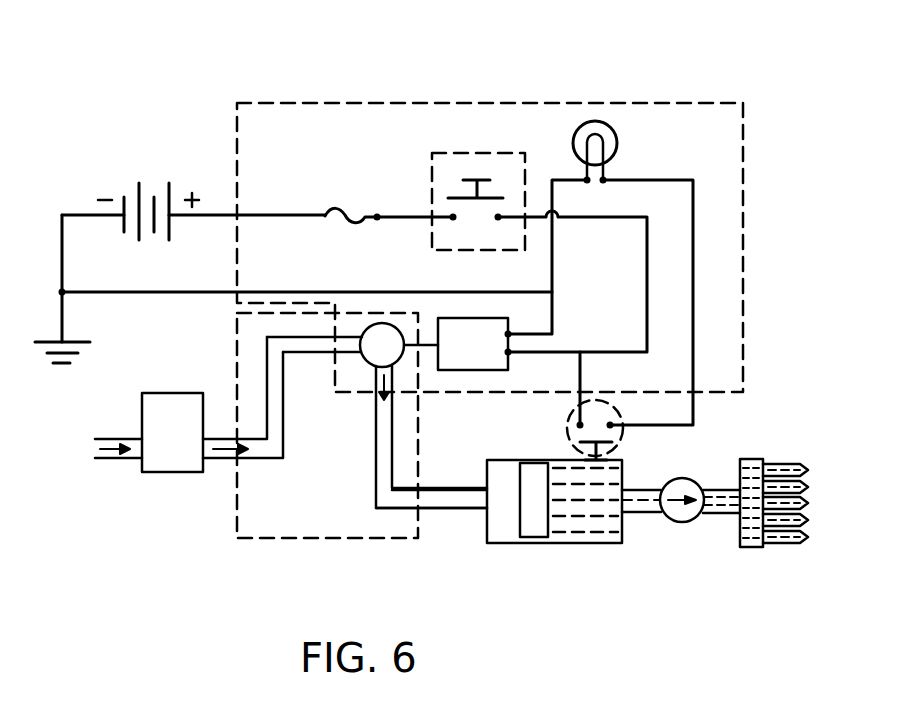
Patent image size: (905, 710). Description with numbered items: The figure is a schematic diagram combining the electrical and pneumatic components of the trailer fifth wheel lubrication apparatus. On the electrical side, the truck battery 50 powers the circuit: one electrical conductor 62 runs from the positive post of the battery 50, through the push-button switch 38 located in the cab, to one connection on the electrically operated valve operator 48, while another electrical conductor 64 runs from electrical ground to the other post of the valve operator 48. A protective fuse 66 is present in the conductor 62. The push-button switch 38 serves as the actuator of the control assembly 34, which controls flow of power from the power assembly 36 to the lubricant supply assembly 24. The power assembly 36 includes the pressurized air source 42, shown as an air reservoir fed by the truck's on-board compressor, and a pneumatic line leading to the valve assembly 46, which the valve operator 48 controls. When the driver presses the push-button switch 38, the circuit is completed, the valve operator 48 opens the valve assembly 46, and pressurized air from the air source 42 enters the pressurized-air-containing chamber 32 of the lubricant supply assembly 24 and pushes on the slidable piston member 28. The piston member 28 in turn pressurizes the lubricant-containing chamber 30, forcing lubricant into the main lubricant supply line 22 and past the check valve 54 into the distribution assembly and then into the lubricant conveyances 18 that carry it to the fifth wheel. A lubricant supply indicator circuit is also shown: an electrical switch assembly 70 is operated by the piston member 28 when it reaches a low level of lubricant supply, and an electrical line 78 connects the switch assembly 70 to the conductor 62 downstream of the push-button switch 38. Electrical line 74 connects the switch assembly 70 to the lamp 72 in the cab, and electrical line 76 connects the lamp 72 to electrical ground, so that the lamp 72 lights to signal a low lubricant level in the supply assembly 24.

The lubricant conveyances 18 is at (775, 540).
The main lubricant supply line 22 is at (720, 515).
The lubricant supply assembly 24 is at (566, 565).
The slidable piston member 28 is at (541, 533).
The lubricant-containing chamber 30 is at (586, 500).
The pressurized-air-containing chamber 32 is at (510, 490).
The control assembly 34 is at (438, 103).
The power assembly 36 is at (300, 539).
The push-button switch 38 is at (462, 153).
The pressurized air source 42 is at (178, 393).
The valve assembly 46 is at (385, 323).
The electrically operated valve operator 48 is at (482, 333).
The truck battery 50 is at (146, 190).
The check valve 54 is at (702, 482).
The electrical conductor 62 is at (280, 215).
The electrical conductor 64 is at (140, 292).
The protective fuse 66 is at (350, 213).
The electrical switch assembly 70 is at (567, 428).
The lamp 72 is at (617, 143).
The electrical line 74 is at (693, 227).
The electrical line 76 is at (587, 180).
The electrical line 78 is at (614, 388).